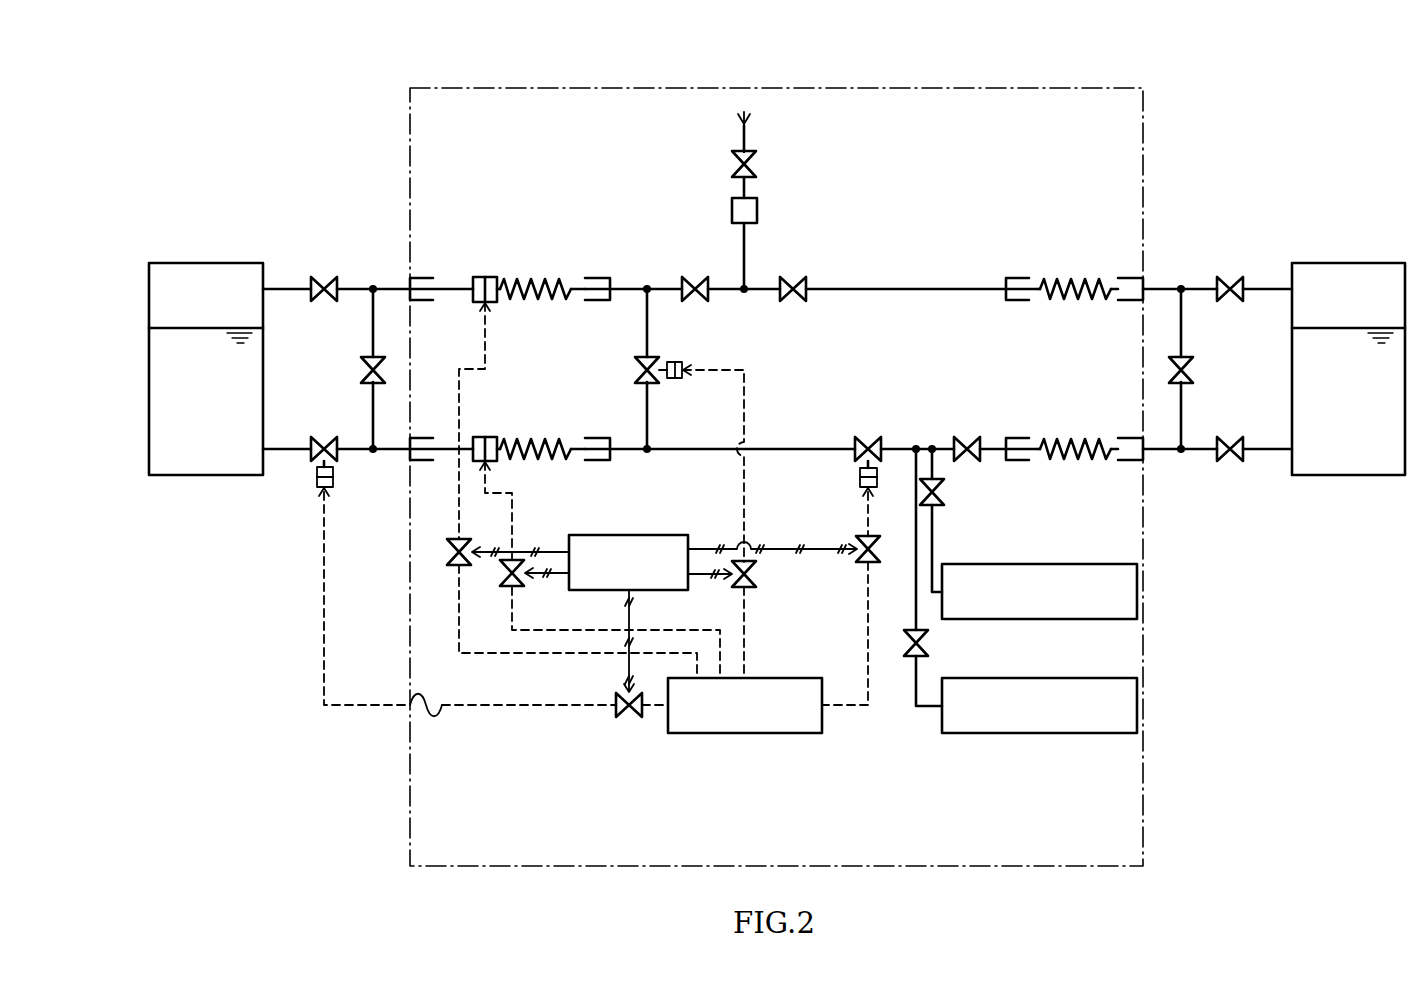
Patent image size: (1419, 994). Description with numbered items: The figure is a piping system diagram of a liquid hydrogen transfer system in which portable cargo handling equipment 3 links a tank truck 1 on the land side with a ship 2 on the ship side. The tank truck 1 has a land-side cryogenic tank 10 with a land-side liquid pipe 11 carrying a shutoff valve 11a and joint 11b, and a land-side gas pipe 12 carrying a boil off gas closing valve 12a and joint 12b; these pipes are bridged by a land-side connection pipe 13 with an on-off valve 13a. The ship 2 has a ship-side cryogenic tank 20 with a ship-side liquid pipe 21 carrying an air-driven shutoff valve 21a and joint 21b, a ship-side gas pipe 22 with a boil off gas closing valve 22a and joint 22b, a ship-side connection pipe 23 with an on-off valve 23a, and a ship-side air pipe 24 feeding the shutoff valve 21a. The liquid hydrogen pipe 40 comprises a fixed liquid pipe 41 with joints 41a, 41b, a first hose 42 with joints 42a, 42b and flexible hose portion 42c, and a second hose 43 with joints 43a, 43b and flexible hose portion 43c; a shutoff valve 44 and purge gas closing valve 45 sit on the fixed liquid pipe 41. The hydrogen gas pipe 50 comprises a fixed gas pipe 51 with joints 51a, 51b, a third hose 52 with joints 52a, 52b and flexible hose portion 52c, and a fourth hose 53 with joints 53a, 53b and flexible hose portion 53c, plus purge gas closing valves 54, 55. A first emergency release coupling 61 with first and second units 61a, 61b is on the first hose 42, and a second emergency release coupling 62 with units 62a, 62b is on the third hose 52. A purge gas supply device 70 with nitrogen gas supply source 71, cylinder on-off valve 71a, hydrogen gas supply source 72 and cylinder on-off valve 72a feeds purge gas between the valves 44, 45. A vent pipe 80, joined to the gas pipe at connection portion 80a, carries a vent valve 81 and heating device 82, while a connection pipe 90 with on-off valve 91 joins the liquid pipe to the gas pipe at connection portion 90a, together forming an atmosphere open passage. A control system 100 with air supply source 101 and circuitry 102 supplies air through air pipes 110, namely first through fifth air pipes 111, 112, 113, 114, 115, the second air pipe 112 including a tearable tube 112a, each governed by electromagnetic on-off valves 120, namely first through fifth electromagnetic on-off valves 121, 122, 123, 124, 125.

The tank truck 1 is at (1378, 185).
The ship 2 is at (184, 179).
The portable cargo handling equipment 3 is at (956, 86).
The land-side cryogenic tank 10 is at (1342, 263).
The land-side liquid pipe 11 is at (1270, 452).
The shutoff valve 11a is at (1232, 437).
The joint 11b is at (1126, 438).
The land-side gas pipe 12 is at (1270, 292).
The boil off gas closing valve 12a is at (1232, 278).
The joint 12b is at (1126, 278).
The land-side connection pipe 13 is at (1181, 322).
The on-off valve 13a is at (1193, 370).
The ship-side cryogenic tank 20 is at (207, 263).
The ship-side liquid pipe 21 is at (281, 452).
The shutoff valve 21a is at (326, 437).
The joint 21b is at (427, 438).
The ship-side gas pipe 22 is at (281, 292).
The boil off gas closing valve 22a is at (326, 278).
The joint 22b is at (427, 278).
The ship-side connection pipe 23 is at (372, 318).
The on-off valve 23a is at (361, 370).
The ship-side air pipe 24 is at (345, 707).
The liquid hydrogen pipe 40 is at (792, 439).
The fixed liquid pipe 41 is at (823, 448).
The joint 41a is at (606, 438).
The joint 41b is at (1014, 438).
The first hose 42 is at (505, 439).
The joint 42a is at (586, 462).
The joint 42b is at (431, 462).
The flexible hose portion 42c is at (536, 440).
The second hose 43 is at (1045, 440).
The joint 43a is at (1030, 462).
The joint 43b is at (1120, 462).
The flexible hose portion 43c is at (1063, 440).
The shutoff valve 44 is at (866, 438).
The purge gas closing valve 45 is at (965, 438).
The hydrogen gas pipe 50 is at (857, 279).
The fixed gas pipe 51 is at (893, 288).
The joint 51a is at (606, 278).
The joint 51b is at (1014, 278).
The third hose 52 is at (505, 280).
The joint 52a is at (586, 301).
The joint 52b is at (431, 302).
The flexible hose portion 52c is at (536, 279).
The fourth hose 53 is at (1045, 280).
The joint 53a is at (1030, 302).
The joint 53b is at (1120, 301).
The flexible hose portion 53c is at (1063, 279).
The purge gas closing valve 54 is at (694, 278).
The purge gas closing valve 55 is at (795, 278).
The first emergency release coupling 61 is at (488, 437).
The first unit 61a is at (497, 463).
The second unit 61b is at (480, 465).
The second emergency release coupling 62 is at (497, 303).
The first unit 62a is at (489, 277).
The second unit 62b is at (476, 277).
The purge gas supply device 70 is at (1033, 775).
The nitrogen gas supply source 71 is at (1075, 564).
The cylinder on-off valve 71a is at (938, 506).
The hydrogen gas supply source 72 is at (1078, 734).
The cylinder on-off valve 72a is at (918, 660).
The vent pipe 80 is at (746, 131).
The connection portion 80a is at (745, 295).
The vent valve 81 is at (758, 165).
The heating device 82 is at (757, 203).
The connection pipe 90 is at (648, 322).
The connection portion 90a is at (647, 272).
The on-off valve 91 is at (635, 371).
The control system 100 is at (476, 790).
The air supply source 101 is at (748, 734).
The circuitry 102 is at (628, 535).
The air pipes 110 is at (178, 618).
The first air pipe 111 is at (848, 708).
The second air pipe 112 is at (514, 707).
The tube 112a is at (428, 715).
The third air pipe 113 is at (746, 506).
The fourth air pipe 114 is at (549, 630).
The fifth air pipe 115 is at (542, 655).
The electromagnetic on-off valves 120 is at (178, 788).
The first electromagnetic on-off valve 121 is at (872, 565).
The second electromagnetic on-off valve 122 is at (630, 720).
The third electromagnetic on-off valve 123 is at (750, 590).
The fourth electromagnetic on-off valve 124 is at (505, 590).
The fifth electromagnetic on-off valve 125 is at (455, 568).